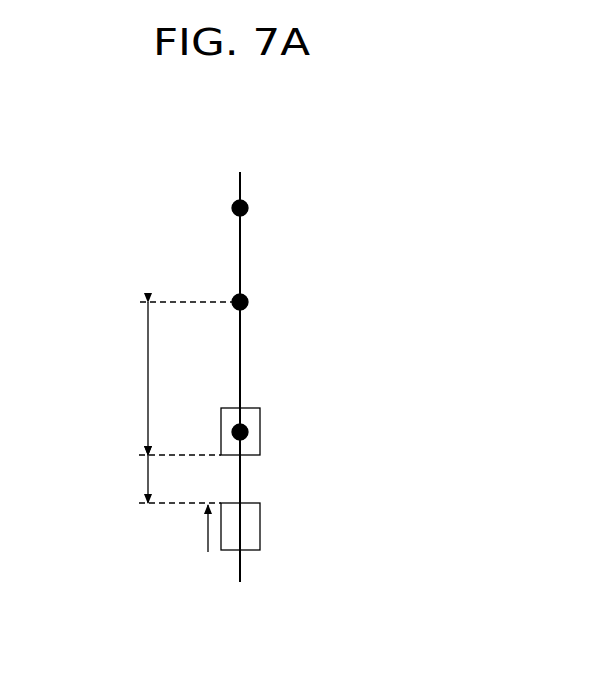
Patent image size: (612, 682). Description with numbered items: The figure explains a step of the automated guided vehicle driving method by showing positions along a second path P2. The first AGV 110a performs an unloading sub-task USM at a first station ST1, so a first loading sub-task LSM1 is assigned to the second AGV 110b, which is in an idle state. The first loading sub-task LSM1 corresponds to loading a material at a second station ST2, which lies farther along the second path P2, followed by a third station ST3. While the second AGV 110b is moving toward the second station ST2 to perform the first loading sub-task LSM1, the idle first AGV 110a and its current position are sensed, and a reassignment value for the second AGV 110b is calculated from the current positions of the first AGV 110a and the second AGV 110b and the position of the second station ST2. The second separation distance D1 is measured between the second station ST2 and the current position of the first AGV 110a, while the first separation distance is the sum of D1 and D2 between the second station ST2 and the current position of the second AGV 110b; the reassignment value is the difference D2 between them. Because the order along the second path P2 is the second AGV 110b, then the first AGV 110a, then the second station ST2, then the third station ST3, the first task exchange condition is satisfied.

The second path P2 is at (242, 186).
The third station ST3 is at (234, 204).
The second station ST2 is at (234, 298).
The first station ST1 is at (236, 429).
The second separation distance D1 is at (130, 378).
The difference D2 is at (130, 479).
The unloading sub-task USM is at (296, 450).
The first AGV 110a is at (245, 456).
The first loading sub-task LSM1 is at (294, 545).
The second AGV 110b is at (245, 551).